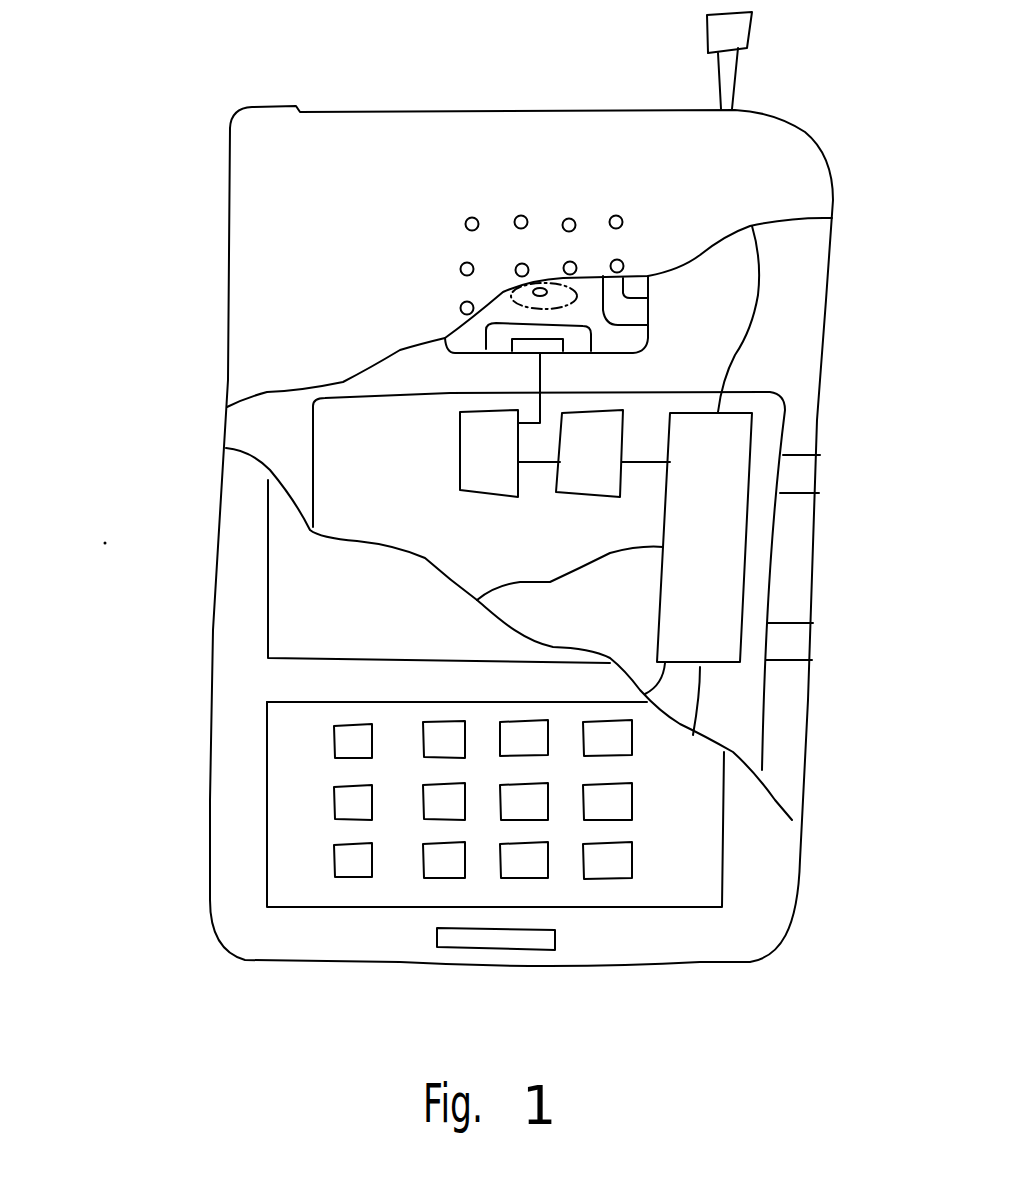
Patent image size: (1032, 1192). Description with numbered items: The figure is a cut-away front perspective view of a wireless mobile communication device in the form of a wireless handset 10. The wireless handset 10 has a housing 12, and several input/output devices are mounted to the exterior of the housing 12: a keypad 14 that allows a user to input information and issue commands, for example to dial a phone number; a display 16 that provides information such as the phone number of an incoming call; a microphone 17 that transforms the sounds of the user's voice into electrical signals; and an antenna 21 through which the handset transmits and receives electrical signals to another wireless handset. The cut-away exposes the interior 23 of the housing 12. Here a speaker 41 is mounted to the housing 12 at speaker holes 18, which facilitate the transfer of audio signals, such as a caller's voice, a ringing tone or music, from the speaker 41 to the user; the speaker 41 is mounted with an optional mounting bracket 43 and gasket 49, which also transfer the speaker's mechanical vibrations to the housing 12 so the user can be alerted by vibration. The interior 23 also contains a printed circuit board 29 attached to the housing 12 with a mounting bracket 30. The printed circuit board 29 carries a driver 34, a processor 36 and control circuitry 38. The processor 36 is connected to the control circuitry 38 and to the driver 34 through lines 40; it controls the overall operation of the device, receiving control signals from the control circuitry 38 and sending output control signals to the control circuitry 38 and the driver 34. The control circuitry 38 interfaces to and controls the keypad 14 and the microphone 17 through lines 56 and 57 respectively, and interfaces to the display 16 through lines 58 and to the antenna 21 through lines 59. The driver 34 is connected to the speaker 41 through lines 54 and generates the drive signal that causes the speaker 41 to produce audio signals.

The wireless handset 10 is at (120, 94).
The housing 12 is at (228, 266).
The keypad 14 is at (267, 803).
The display 16 is at (268, 617).
The microphone 17 is at (437, 938).
The speaker holes 18 is at (432, 208).
The antenna 21 is at (737, 76).
The interior 23 is at (813, 280).
The printed circuit board 29 is at (313, 428).
The mounting bracket 30 is at (796, 500).
The driver 34 is at (460, 455).
The processor 36 is at (583, 496).
The control circuitry 38 is at (663, 523).
The lines 40 is at (535, 466).
The speaker 41 is at (643, 338).
The mounting bracket 43 is at (648, 290).
The gasket 49 is at (648, 311).
The lines 54 is at (540, 360).
The lines 56 is at (650, 688).
The lines 57 is at (701, 700).
The lines 58 is at (550, 582).
The lines 59 is at (738, 350).